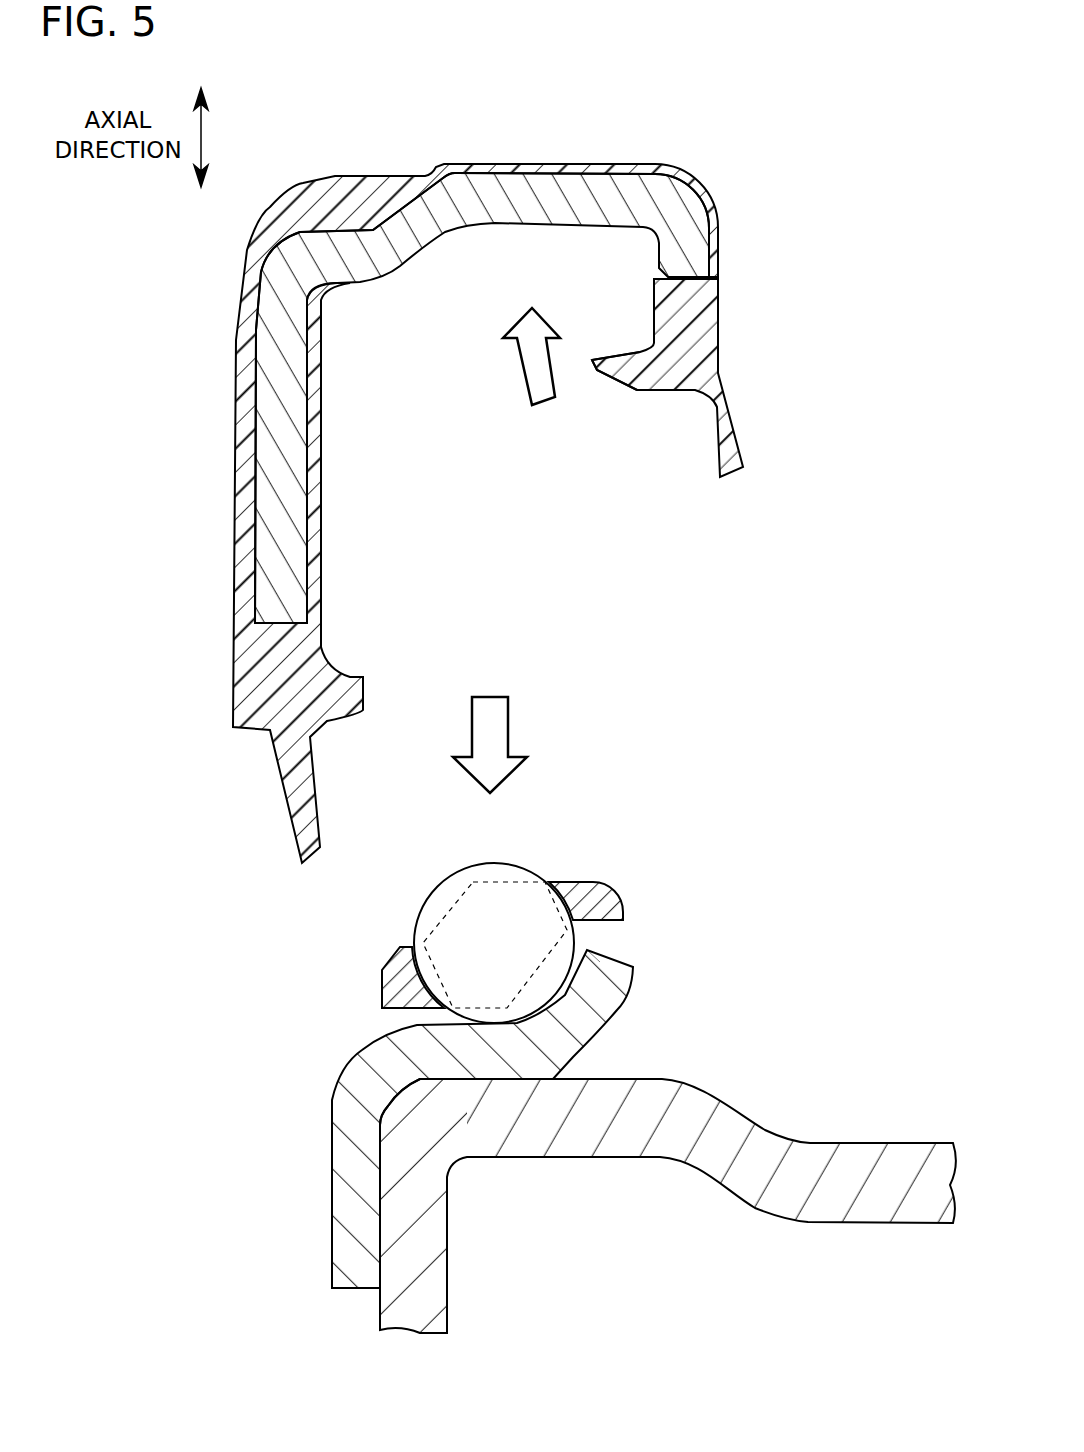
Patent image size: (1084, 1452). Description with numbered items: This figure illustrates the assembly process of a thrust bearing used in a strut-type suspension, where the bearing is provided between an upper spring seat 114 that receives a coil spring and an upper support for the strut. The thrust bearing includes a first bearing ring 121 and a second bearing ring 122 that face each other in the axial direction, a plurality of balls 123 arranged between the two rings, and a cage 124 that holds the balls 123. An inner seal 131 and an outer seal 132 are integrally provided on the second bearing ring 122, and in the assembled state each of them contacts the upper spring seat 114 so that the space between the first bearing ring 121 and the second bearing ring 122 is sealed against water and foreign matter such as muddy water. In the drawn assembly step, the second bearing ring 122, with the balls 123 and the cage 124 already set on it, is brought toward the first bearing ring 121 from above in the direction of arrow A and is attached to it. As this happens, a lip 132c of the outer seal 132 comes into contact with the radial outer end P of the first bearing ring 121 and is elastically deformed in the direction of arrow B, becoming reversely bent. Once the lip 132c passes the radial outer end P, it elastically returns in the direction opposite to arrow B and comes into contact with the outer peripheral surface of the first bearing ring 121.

The upper spring seat 114 is at (840, 1145).
The first bearing ring 121 is at (557, 1020).
The second bearing ring 122 is at (540, 190).
The ball 123 is at (403, 900).
The cage 124 is at (360, 985).
The inner seal 131 is at (215, 673).
The outer seal 132 is at (677, 317).
The lip 132c is at (570, 370).
The arrow A is at (472, 718).
The arrow B is at (487, 370).
The radial outer end P is at (593, 962).